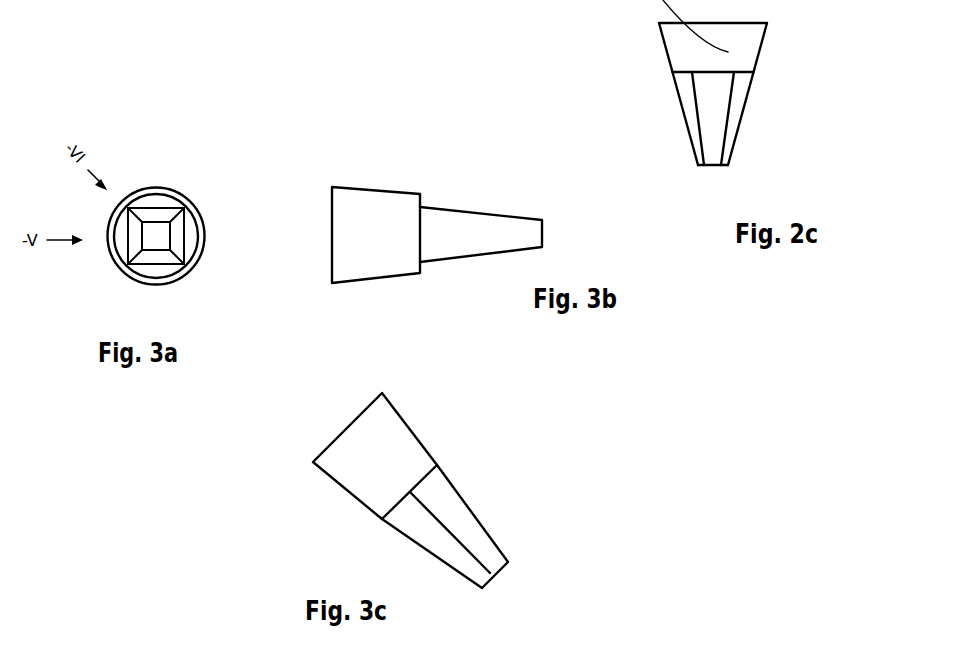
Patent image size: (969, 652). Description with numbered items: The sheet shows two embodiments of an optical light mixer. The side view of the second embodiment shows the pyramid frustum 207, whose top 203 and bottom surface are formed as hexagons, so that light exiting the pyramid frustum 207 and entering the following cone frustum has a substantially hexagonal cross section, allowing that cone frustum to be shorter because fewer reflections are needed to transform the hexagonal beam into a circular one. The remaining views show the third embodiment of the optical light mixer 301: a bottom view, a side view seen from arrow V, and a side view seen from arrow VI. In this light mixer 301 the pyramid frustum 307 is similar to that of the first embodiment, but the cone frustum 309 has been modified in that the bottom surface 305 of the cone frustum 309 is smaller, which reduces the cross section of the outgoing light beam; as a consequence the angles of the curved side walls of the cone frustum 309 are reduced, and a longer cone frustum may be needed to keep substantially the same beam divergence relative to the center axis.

In FIG. 2C, the top 203 is at (720, 165).
In FIG. 2C, the pyramid frustum 207 is at (703, 107).
In FIG. 3A, the optical light mixer 301 is at (206, 152).
In FIG. 3B, the bottom surface 305 is at (394, 290).
In FIG. 3C, the bottom surface 305 is at (395, 470).
In FIG. 3B, the pyramid frustum 307 is at (498, 239).
In FIG. 3C, the pyramid frustum 307 is at (478, 528).
In FIG. 3B, the cone frustum 309 is at (353, 228).
In FIG. 3C, the cone frustum 309 is at (380, 427).